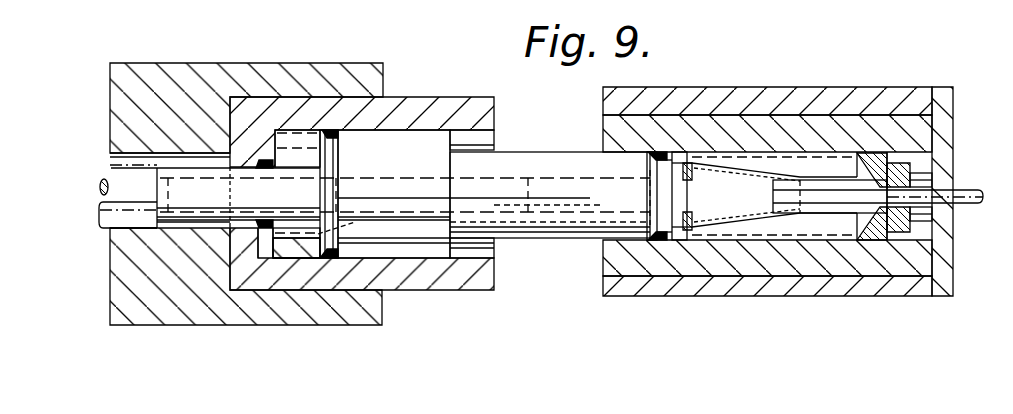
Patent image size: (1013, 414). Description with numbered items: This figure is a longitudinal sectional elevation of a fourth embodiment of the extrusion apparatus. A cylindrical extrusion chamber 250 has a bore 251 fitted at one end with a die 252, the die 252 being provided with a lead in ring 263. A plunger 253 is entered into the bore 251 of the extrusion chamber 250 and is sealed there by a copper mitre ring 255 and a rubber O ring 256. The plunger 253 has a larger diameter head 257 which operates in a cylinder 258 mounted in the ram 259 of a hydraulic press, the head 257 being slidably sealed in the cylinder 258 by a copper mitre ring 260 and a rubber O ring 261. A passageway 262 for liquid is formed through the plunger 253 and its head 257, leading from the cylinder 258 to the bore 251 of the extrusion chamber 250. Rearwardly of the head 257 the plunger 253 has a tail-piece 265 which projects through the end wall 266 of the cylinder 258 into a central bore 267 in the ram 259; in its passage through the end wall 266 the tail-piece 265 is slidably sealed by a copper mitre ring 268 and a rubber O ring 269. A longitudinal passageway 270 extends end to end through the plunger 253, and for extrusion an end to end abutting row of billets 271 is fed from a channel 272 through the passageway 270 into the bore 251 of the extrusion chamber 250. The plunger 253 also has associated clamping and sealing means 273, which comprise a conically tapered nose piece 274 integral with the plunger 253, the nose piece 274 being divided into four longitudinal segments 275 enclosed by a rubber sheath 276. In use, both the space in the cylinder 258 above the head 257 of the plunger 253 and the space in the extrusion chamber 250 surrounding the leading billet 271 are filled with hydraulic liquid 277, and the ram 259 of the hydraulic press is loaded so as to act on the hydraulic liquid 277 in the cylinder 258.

The extrusion chamber 250 is at (768, 127).
The bore 251 is at (840, 150).
The die 252 is at (918, 178).
The plunger 253 is at (544, 165).
The copper mitre ring 255 is at (652, 152).
The rubber O ring 256 is at (668, 152).
The head 257 is at (404, 138).
The cylinder 258 is at (471, 112).
The ram 259 is at (158, 80).
The copper mitre ring 260 is at (341, 130).
The rubber O ring 261 is at (329, 130).
The passageway 262 is at (545, 228).
The lead in ring 263 is at (892, 160).
The tail-piece 265 is at (199, 215).
The end wall 266 is at (240, 275).
The central bore 267 is at (159, 228).
The copper mitre ring 268 is at (261, 230).
The rubber O ring 269 is at (281, 240).
The longitudinal passageway 270 is at (393, 226).
The billets 271 is at (122, 185).
The channel 272 is at (123, 218).
The clamping and sealing means 273 is at (700, 226).
The nose piece 274 is at (677, 240).
The longitudinal segments 275 is at (732, 224).
The rubber sheath 276 is at (767, 225).
The hydraulic liquid 277 is at (297, 145).